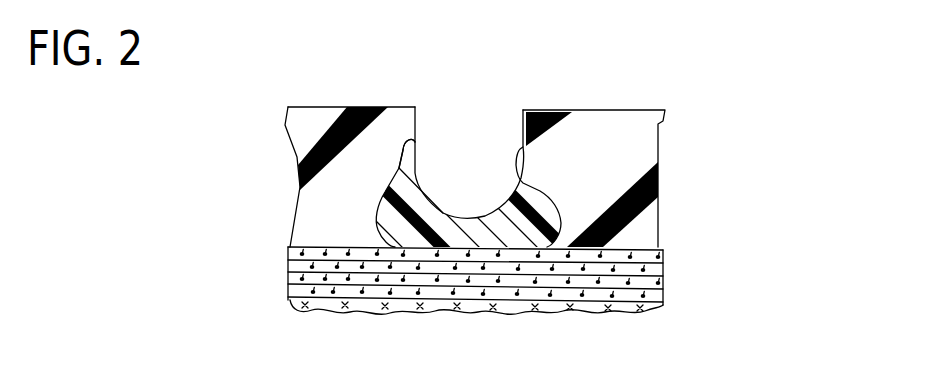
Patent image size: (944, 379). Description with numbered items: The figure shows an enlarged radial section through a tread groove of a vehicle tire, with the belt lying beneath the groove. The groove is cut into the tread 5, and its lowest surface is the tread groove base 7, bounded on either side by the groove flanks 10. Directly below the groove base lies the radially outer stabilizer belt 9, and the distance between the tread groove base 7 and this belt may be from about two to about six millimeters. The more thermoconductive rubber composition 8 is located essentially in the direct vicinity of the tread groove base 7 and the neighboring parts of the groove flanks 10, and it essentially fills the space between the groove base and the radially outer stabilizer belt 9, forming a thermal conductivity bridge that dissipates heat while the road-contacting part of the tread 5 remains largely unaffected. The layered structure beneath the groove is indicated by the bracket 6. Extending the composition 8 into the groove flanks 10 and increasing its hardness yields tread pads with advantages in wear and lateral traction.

The tread 5 is at (308, 125).
The substrate layer stack 6 is at (519, 258).
The tread groove base 7 is at (476, 196).
The more thermoconductive rubber composition 8 is at (543, 213).
The radially outer stabilizer belt 9 is at (650, 254).
The groove flanks 10 is at (440, 160).